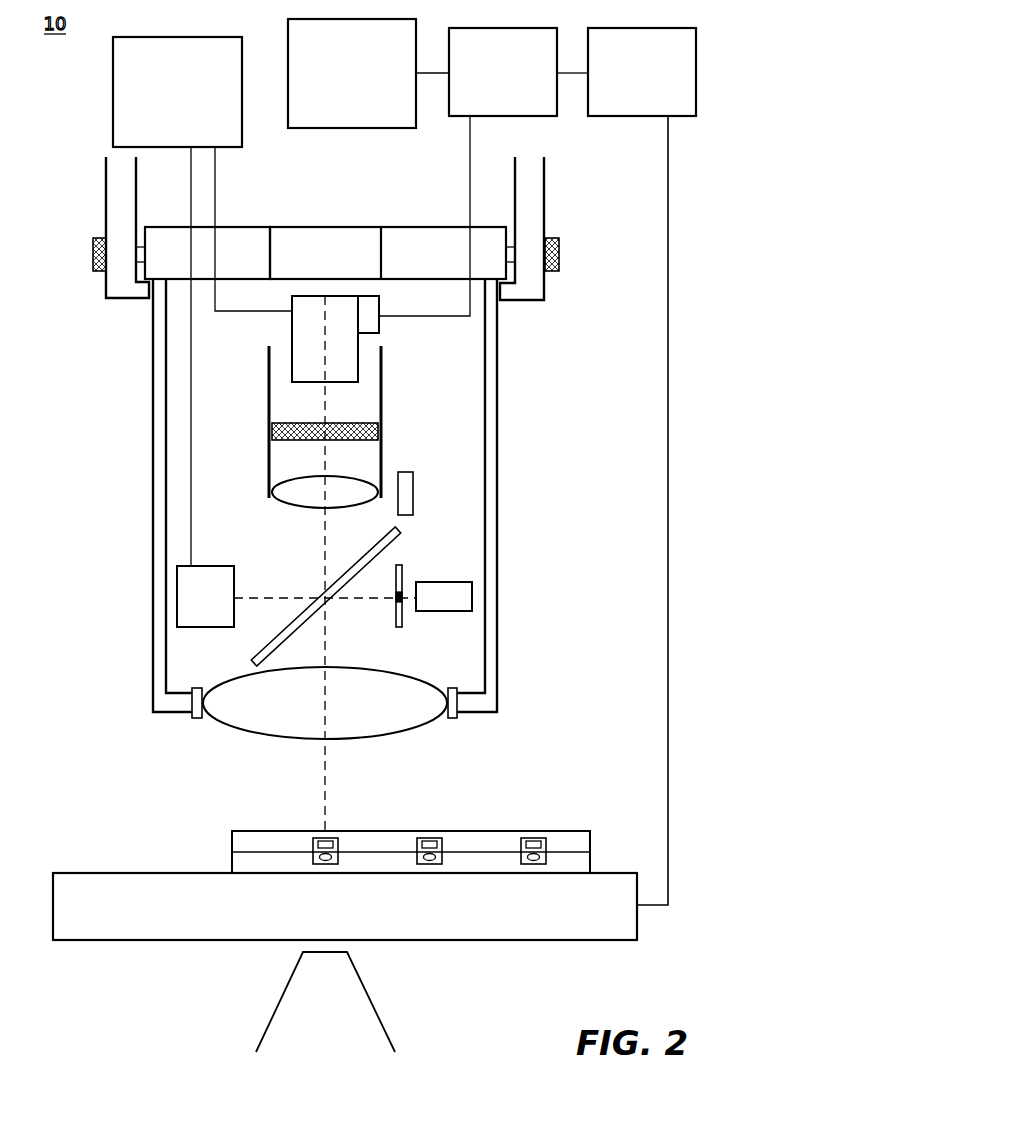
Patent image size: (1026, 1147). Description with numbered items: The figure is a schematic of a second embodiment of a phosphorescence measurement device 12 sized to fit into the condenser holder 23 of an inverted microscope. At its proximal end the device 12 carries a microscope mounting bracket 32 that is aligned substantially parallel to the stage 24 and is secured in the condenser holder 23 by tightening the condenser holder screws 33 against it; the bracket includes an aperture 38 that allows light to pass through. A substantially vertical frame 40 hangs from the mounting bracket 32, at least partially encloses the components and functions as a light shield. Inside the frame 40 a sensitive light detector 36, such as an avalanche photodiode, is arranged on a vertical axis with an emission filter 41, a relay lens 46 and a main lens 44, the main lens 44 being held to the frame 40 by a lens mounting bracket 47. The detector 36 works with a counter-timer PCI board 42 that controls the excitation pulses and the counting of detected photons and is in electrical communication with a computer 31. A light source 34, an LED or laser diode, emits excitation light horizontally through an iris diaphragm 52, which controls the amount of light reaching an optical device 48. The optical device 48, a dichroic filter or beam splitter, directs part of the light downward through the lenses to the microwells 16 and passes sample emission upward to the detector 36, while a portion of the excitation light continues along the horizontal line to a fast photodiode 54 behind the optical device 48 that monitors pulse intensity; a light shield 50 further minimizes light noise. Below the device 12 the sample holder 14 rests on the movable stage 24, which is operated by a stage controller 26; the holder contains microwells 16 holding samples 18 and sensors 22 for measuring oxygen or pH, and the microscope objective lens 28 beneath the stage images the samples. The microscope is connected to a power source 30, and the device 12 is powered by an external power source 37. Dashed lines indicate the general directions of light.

The phosphorescence measurement device 12 is at (180, 345).
The sample holder 14 is at (232, 840).
The sample wells 16 is at (527, 850).
The sample 18 is at (428, 866).
The sensor 22 is at (420, 840).
The condenser holder 23 is at (117, 211).
The stage 24 is at (74, 918).
The stage controller 26 is at (631, 108).
The microscope objective lens 28 is at (305, 1037).
The power source 30 is at (341, 120).
The computer 31 is at (492, 108).
The microscope mounting bracket 32 is at (240, 247).
The condenser holder screws 33 is at (93, 254).
The light source 34 is at (444, 598).
The sensitive light detector 36 is at (297, 350).
The external power source 37 is at (166, 138).
The aperture 38 is at (328, 247).
The frame 40 is at (490, 490).
The emission filter 41 is at (280, 432).
The counter-timer PCI board 42 is at (382, 307).
The main lens 44 is at (250, 733).
The relay lens 46 is at (292, 503).
The lens mounting bracket 47 is at (455, 720).
The optical device 48 is at (288, 619).
The light shield 50 is at (408, 481).
The iris diaphragm 52 is at (400, 628).
The fast photodiode 54 is at (205, 596).